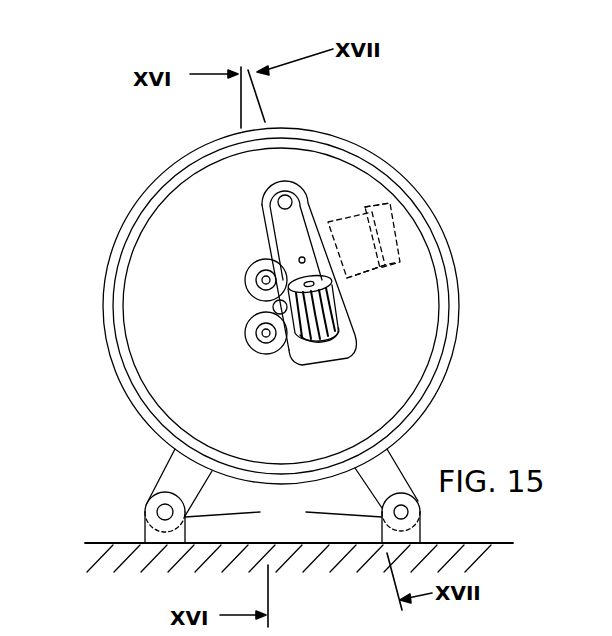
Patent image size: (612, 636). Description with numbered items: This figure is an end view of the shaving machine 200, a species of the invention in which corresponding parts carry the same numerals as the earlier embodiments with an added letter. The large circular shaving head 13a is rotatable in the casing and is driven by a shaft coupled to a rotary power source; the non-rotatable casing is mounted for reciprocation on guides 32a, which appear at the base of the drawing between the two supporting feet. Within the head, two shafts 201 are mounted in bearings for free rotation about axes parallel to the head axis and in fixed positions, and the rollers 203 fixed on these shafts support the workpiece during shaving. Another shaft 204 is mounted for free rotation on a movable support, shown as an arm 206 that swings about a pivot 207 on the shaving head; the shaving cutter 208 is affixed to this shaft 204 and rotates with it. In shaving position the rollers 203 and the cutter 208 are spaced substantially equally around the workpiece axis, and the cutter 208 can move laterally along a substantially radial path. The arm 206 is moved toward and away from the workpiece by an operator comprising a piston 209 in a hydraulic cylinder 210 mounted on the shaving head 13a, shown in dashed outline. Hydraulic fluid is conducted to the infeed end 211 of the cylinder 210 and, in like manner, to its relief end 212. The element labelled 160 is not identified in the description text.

The shaving head 13a is at (143, 424).
The shaving machine 200 is at (461, 373).
The guides 32a is at (283, 512).
The shaft 204 is at (335, 284).
The bracket 160 is at (268, 260).
The arm 206 is at (315, 227).
The pivot 207 is at (292, 197).
The rollers 203 is at (252, 272).
The shafts 201 is at (258, 333).
The shaving cutter 208 is at (340, 307).
The piston 209 is at (350, 223).
The hydraulic cylinder 210 is at (398, 262).
The infeed end 211 is at (394, 239).
The relief end 212 is at (374, 211).